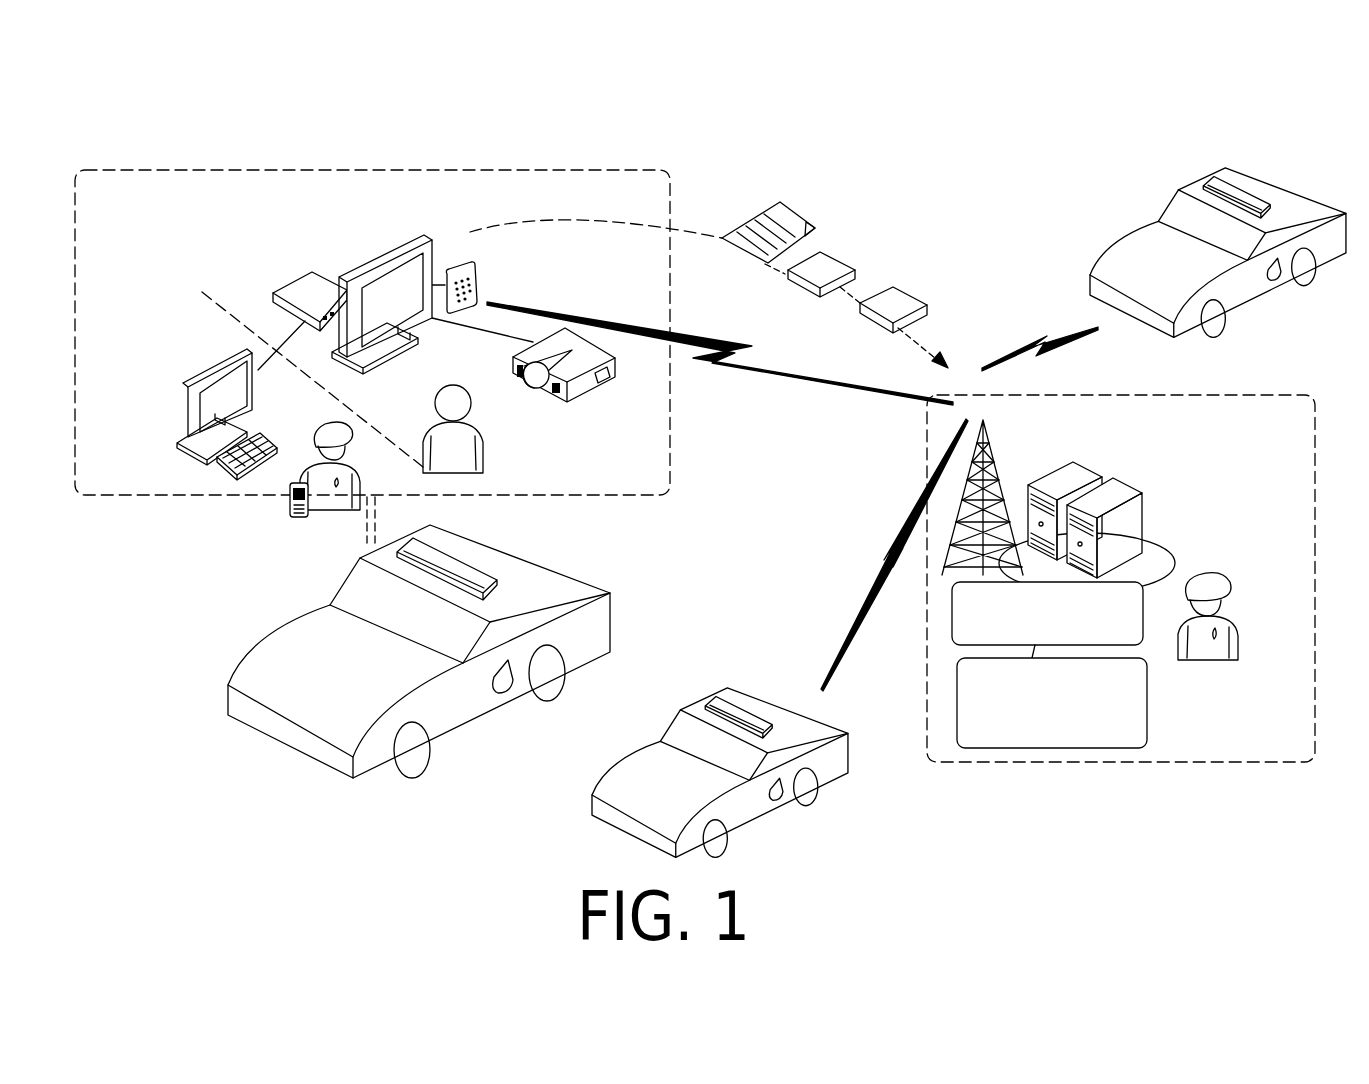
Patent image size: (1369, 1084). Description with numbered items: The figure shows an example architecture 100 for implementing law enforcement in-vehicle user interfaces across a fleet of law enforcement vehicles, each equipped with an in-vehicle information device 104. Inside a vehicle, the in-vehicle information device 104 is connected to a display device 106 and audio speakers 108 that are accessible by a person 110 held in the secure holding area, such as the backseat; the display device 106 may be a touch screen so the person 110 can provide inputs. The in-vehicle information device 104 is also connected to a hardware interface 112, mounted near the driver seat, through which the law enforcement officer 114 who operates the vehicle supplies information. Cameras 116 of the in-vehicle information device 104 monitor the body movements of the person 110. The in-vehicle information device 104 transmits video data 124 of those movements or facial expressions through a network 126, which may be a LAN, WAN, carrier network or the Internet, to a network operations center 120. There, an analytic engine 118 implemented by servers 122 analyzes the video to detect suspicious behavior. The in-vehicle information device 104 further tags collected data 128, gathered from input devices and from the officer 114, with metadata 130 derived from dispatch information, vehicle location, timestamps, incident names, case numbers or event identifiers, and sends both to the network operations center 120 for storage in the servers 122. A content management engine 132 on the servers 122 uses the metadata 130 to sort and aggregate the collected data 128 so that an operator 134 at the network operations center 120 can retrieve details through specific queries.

The architecture 100 is at (136, 140).
The in-vehicle information device 104 is at (300, 278).
The display device 106 is at (396, 252).
The audio speakers 108 is at (470, 263).
The person 110 is at (430, 418).
The hardware interface 112 is at (237, 357).
The law enforcement officer 114 is at (316, 513).
The cameras 116 is at (590, 389).
The analytic engine 118 is at (1047, 613).
The network operations center 120 is at (1121, 578).
The servers 122 is at (1140, 504).
The video data 124 is at (878, 325).
The network 126 is at (783, 373).
The collected data 128 is at (805, 292).
The metadata 130 is at (760, 263).
The content management engine 132 is at (1052, 703).
The operator 134 is at (1239, 613).